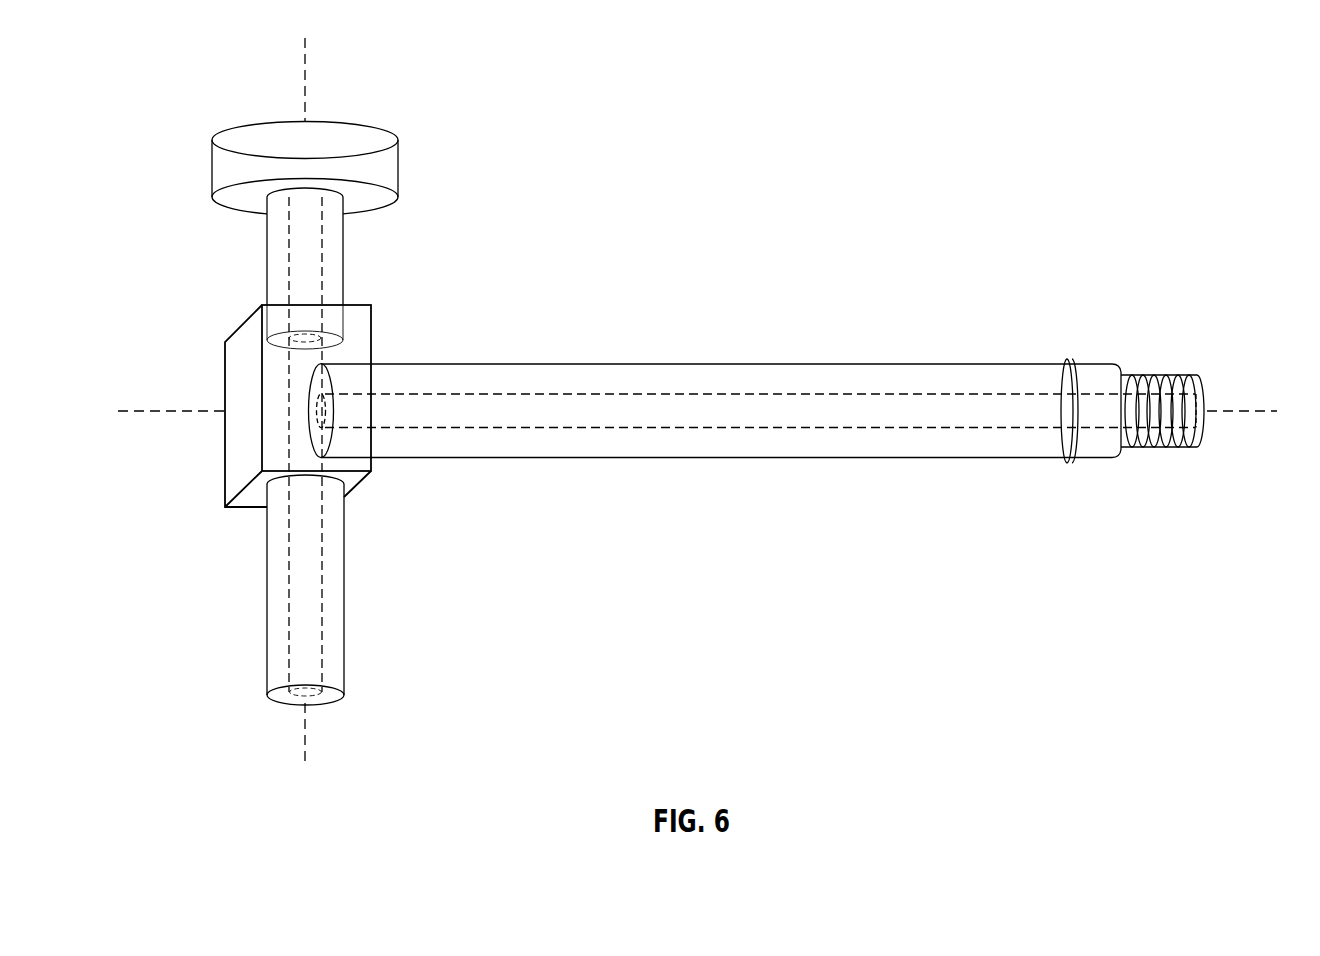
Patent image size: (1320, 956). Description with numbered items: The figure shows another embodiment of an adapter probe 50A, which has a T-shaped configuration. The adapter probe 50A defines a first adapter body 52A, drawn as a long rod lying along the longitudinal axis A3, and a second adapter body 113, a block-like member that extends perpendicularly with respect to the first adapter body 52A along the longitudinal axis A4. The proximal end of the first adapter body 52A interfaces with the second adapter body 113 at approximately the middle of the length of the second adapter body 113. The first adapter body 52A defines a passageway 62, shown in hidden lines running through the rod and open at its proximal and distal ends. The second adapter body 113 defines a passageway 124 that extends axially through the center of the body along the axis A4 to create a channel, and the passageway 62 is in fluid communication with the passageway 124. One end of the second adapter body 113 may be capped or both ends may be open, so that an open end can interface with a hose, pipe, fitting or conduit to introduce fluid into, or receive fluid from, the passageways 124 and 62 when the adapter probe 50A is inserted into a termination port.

The adapter probe 50A is at (704, 170).
The first adapter body 52A is at (776, 351).
The passageway 62 is at (872, 393).
The second adapter body 113 is at (373, 501).
The passageway 124 is at (287, 510).
The longitudinal axis A3 is at (1225, 410).
The longitudinal axis A4 is at (307, 727).